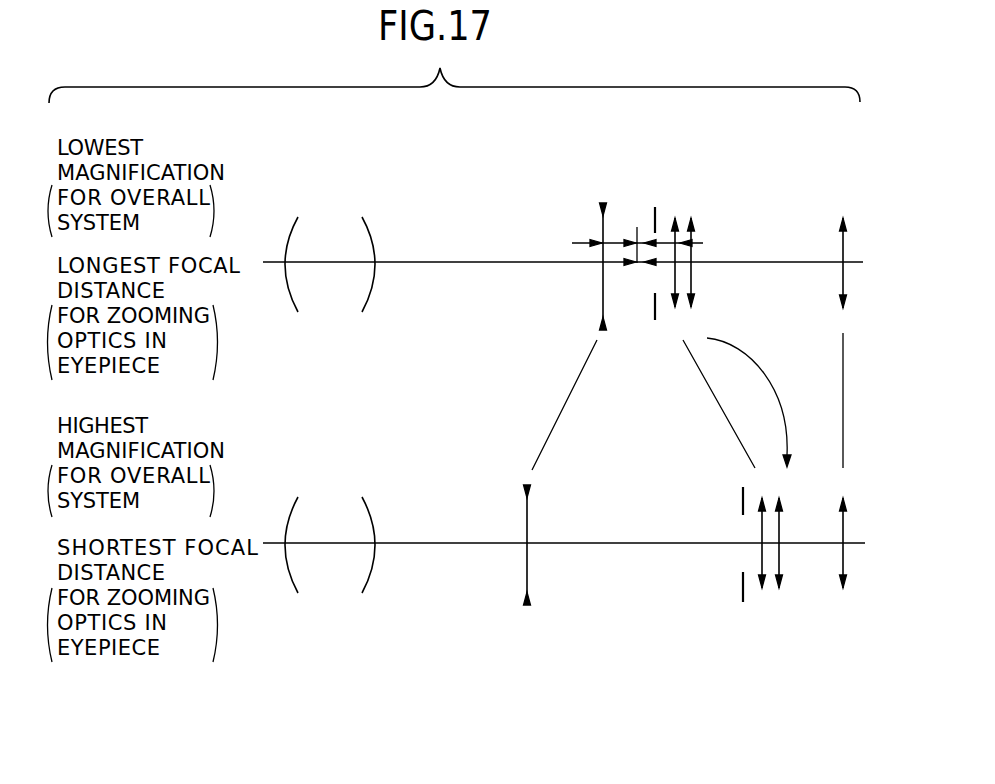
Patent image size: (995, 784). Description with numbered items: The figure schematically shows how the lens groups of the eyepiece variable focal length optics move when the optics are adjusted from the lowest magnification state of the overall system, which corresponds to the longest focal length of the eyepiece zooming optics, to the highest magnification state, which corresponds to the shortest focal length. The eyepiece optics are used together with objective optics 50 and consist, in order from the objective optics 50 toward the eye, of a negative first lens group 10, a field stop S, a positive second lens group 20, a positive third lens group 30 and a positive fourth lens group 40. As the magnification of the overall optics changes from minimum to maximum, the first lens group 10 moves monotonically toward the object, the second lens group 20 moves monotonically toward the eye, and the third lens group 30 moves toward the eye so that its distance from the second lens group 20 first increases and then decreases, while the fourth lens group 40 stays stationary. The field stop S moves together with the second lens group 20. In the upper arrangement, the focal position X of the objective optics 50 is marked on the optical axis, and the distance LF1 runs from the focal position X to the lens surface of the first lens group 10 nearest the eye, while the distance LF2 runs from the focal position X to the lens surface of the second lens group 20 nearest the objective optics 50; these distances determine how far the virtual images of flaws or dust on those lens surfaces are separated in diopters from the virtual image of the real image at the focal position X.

The first lens group 10 is at (570, 387).
The second lens group 20 is at (714, 389).
The third lens group 30 is at (692, 226).
The fourth lens group 40 is at (845, 250).
The objective optics 50 is at (330, 381).
The field stop S is at (654, 227).
The focal position X is at (637, 266).
The distance from the focal position to the first lens group LF1 is at (612, 243).
The distance from the focal position to the second lens group LF2 is at (662, 243).